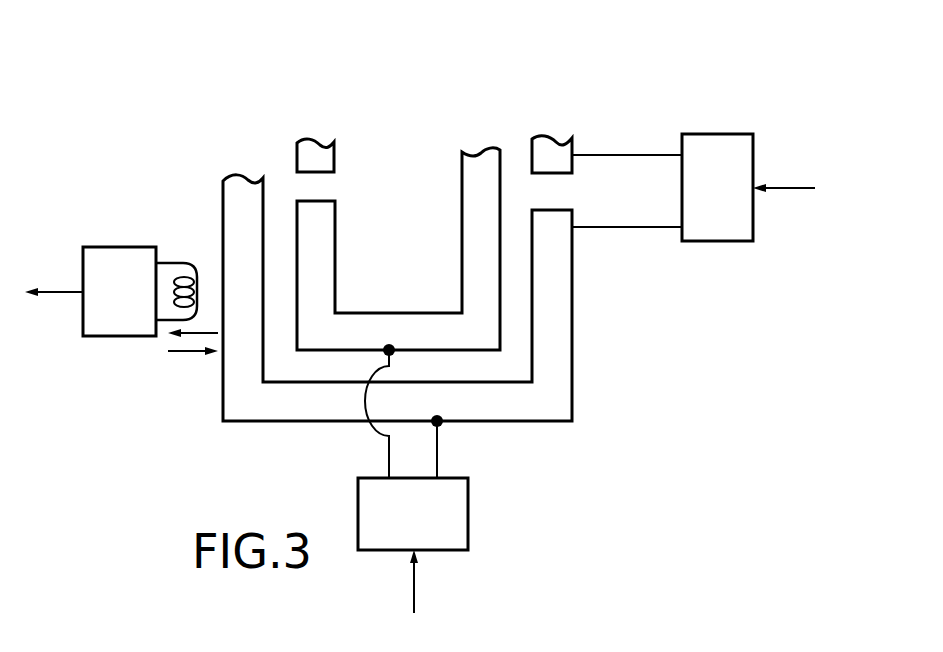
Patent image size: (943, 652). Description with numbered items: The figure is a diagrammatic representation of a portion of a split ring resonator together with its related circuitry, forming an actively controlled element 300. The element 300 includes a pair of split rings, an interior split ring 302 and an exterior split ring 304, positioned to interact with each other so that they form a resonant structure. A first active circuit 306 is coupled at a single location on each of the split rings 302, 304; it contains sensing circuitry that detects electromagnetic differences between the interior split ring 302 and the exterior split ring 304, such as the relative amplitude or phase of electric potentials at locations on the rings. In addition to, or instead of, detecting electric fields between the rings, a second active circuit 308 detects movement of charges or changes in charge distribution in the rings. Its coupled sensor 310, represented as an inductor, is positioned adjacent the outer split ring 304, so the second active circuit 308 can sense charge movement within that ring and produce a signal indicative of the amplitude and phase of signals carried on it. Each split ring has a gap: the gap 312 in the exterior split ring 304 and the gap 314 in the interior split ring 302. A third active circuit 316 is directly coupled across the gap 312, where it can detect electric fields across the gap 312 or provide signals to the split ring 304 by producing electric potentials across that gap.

The actively controlled element 300 is at (737, 297).
The interior split ring 302 is at (462, 195).
The exterior split ring 304 is at (572, 313).
The first active circuit 306 is at (468, 513).
The second active circuit 308 is at (120, 247).
The coupled sensor 310 is at (168, 262).
The gap 312 is at (566, 189).
The gap 314 is at (300, 187).
The third active circuit 316 is at (717, 134).